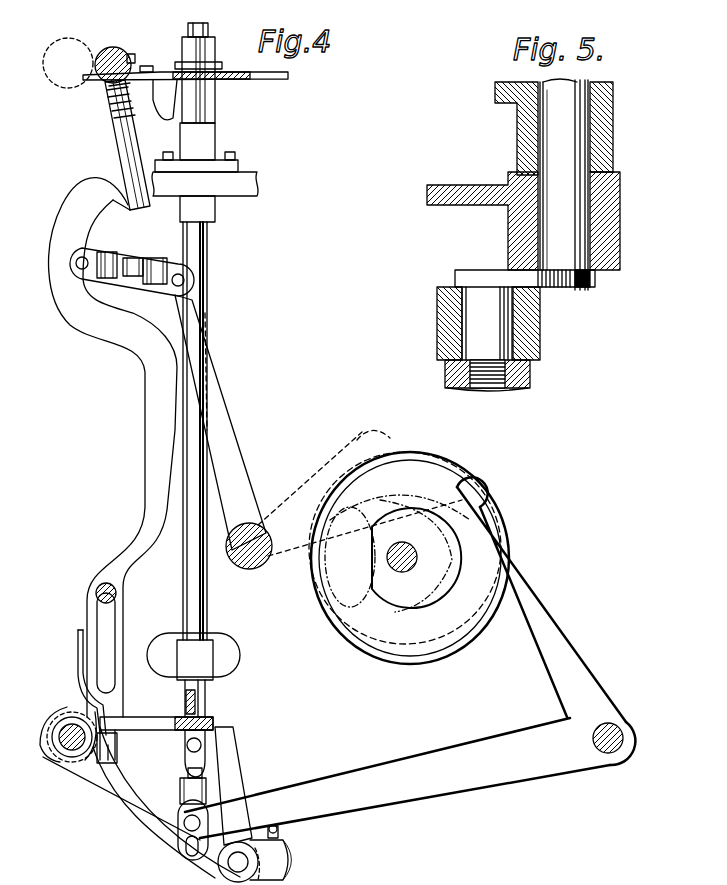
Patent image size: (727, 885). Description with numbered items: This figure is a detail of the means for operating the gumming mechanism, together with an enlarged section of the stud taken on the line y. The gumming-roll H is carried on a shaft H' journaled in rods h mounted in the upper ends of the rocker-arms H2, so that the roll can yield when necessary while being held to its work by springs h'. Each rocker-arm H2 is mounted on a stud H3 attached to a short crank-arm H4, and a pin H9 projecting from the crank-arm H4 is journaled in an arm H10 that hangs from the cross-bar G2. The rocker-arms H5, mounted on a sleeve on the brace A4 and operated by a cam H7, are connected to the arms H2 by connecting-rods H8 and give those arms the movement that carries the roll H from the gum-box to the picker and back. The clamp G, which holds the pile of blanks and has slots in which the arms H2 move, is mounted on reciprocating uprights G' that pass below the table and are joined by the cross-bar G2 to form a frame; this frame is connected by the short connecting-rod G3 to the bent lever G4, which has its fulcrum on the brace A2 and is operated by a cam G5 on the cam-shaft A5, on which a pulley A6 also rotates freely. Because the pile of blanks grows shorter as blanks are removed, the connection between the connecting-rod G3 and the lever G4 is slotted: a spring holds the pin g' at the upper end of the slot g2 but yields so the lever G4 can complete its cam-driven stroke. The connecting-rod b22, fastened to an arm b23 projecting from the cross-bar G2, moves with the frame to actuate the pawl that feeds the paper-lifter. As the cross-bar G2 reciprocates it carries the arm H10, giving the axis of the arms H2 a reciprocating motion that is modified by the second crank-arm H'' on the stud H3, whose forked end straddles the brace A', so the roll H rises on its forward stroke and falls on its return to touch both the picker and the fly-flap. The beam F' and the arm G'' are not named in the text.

In FIG. 4, the clamp G is at (185, 83).
In FIG. 4, the reciprocating uprights G' is at (197, 370).
In FIG. 4, the frame beam F' is at (205, 183).
In FIG. 4, the gumming-roll H is at (115, 53).
In FIG. 4, the pulley A6 is at (73, 45).
In FIG. 4, the shaft H' is at (135, 111).
In FIG. 4, the rods h is at (96, 107).
In FIG. 4, the springs h' is at (108, 106).
In FIG. 4, the rocker-arms H2 is at (50, 262).
In FIG. 5, the rocker-arms H2 is at (482, 221).
In FIG. 4, the connecting-rods H8 is at (132, 265).
In FIG. 4, the rocker-arms H5 is at (228, 540).
In FIG. 4, the brace A4 is at (249, 560).
In FIG. 4, the cam G5 is at (410, 558).
In FIG. 4, the cam H7 is at (420, 466).
In FIG. 4, the cam-shaft A5 is at (398, 567).
In FIG. 4, the bent lever G4 is at (541, 599).
In FIG. 4, the arm G'' is at (410, 778).
In FIG. 4, the brace A2 is at (623, 735).
In FIG. 4, the cross-bar G2 is at (213, 722).
In FIG. 4, the connecting-rod G3 is at (181, 756).
In FIG. 4, the pin g' is at (169, 823).
In FIG. 4, the arm H10 is at (226, 783).
In FIG. 5, the arm H10 is at (471, 323).
In FIG. 4, the slot g2 is at (236, 858).
In FIG. 4, the section line y is at (258, 860).
In FIG. 4, the brace A' is at (49, 737).
In FIG. 4, the second crank-arm H'' is at (120, 773).
In FIG. 5, the second crank-arm H'' is at (535, 184).
In FIG. 4, the connecting-rod b22 is at (77, 660).
In FIG. 4, the arm b23 is at (152, 719).
In FIG. 5, the stud H3 is at (543, 210).
In FIG. 5, the crank-arm H4 is at (552, 282).
In FIG. 5, the pin H9 is at (496, 305).